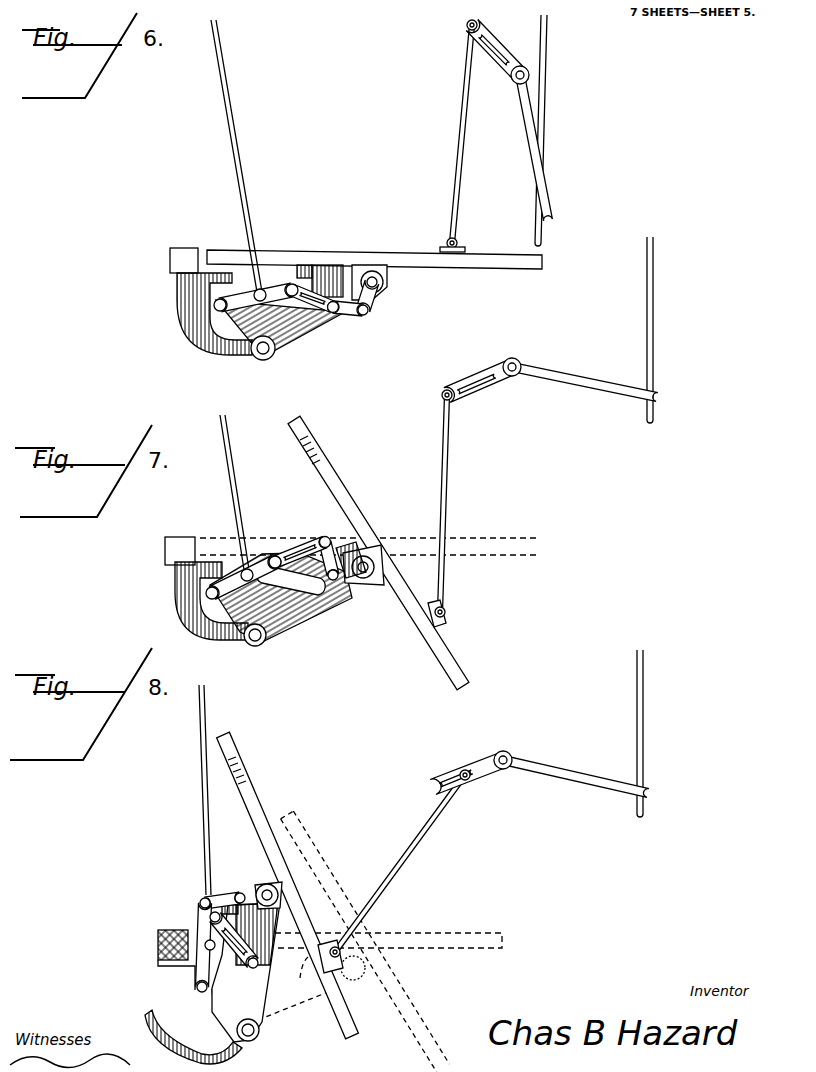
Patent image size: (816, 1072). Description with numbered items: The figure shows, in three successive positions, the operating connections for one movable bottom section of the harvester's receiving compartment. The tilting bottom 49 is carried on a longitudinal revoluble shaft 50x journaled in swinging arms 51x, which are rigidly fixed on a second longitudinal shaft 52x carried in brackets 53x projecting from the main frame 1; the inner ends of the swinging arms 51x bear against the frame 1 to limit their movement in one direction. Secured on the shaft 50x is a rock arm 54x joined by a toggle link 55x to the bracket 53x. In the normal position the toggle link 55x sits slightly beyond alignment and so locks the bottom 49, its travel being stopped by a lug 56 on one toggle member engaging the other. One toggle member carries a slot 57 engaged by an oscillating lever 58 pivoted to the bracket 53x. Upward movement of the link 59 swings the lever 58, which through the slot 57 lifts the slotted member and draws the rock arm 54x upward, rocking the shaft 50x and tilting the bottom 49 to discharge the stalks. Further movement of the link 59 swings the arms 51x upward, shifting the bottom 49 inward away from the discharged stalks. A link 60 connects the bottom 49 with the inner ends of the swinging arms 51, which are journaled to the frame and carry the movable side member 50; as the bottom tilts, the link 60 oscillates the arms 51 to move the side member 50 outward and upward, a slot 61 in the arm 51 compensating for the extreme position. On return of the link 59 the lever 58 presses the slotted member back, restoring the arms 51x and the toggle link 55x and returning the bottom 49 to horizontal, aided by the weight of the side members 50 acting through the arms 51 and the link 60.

In FIG. 6, the main frame 1 is at (176, 263).
In FIG. 7, the main frame 1 is at (173, 548).
In FIG. 8, the main frame 1 is at (157, 948).
In FIG. 6, the tilting bottom 49 is at (374, 247).
In FIG. 7, the tilting bottom 49 is at (350, 513).
In FIG. 8, the tilting bottom 49 is at (260, 815).
In FIG. 6, the movable side member 50 is at (548, 126).
In FIG. 7, the movable side member 50 is at (656, 305).
In FIG. 8, the movable side member 50 is at (638, 707).
In FIG. 6, the swinging arm 51 is at (520, 121).
In FIG. 7, the swinging arm 51 is at (560, 372).
In FIG. 8, the swinging arm 51 is at (517, 773).
In FIG. 6, the link 60 is at (462, 180).
In FIG. 7, the link 60 is at (446, 508).
In FIG. 8, the link 60 is at (407, 860).
In FIG. 6, the slot 61 is at (482, 36).
In FIG. 7, the slot 61 is at (470, 374).
In FIG. 8, the slot 61 is at (452, 773).
In FIG. 6, the link 59 is at (240, 151).
In FIG. 7, the link 59 is at (243, 477).
In FIG. 8, the link 59 is at (197, 777).
In FIG. 6, the oscillating lever 58 is at (247, 297).
In FIG. 7, the oscillating lever 58 is at (228, 567).
In FIG. 8, the oscillating lever 58 is at (207, 967).
In FIG. 6, the slot 57 is at (305, 275).
In FIG. 7, the slot 57 is at (292, 551).
In FIG. 8, the slot 57 is at (223, 957).
In FIG. 6, the lug 56 is at (330, 270).
In FIG. 7, the lug 56 is at (340, 548).
In FIG. 8, the lug 56 is at (200, 895).
In FIG. 6, the revoluble shaft 50x is at (385, 292).
In FIG. 7, the revoluble shaft 50x is at (363, 579).
In FIG. 8, the revoluble shaft 50x is at (280, 893).
In FIG. 6, the swinging arm 51x is at (302, 327).
In FIG. 7, the swinging arm 51x is at (297, 612).
In FIG. 8, the swinging arm 51x is at (263, 960).
In FIG. 6, the longitudinal shaft 52x is at (263, 361).
In FIG. 7, the longitudinal shaft 52x is at (255, 646).
In FIG. 8, the longitudinal shaft 52x is at (262, 1037).
In FIG. 6, the bracket 53x is at (240, 323).
In FIG. 7, the bracket 53x is at (233, 607).
In FIG. 8, the bracket 53x is at (230, 997).
In FIG. 6, the rock arm 54x is at (372, 313).
In FIG. 7, the rock arm 54x is at (342, 568).
In FIG. 8, the rock arm 54x is at (247, 888).
In FIG. 6, the toggle link 55x is at (353, 318).
In FIG. 7, the toggle link 55x is at (312, 535).
In FIG. 8, the toggle link 55x is at (203, 910).